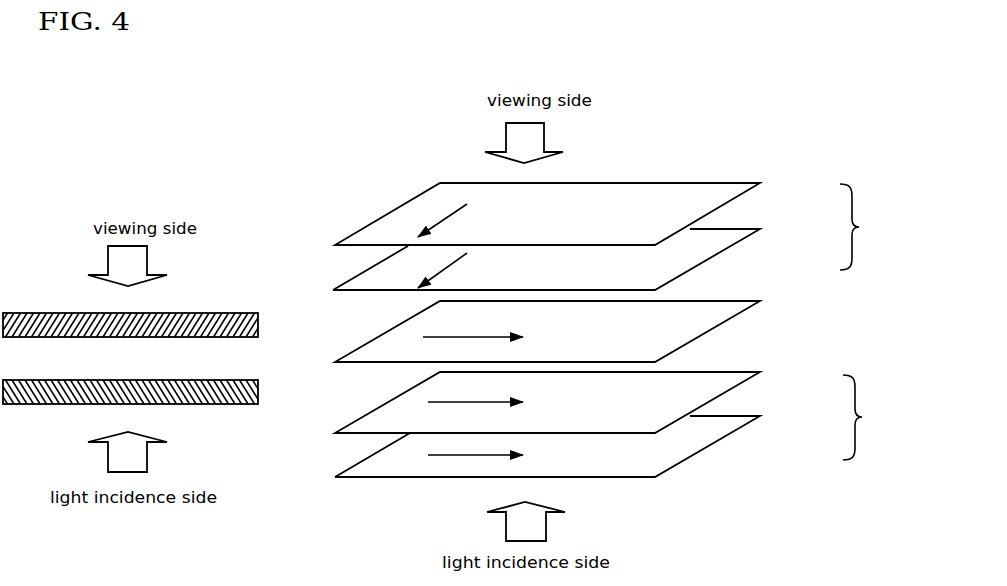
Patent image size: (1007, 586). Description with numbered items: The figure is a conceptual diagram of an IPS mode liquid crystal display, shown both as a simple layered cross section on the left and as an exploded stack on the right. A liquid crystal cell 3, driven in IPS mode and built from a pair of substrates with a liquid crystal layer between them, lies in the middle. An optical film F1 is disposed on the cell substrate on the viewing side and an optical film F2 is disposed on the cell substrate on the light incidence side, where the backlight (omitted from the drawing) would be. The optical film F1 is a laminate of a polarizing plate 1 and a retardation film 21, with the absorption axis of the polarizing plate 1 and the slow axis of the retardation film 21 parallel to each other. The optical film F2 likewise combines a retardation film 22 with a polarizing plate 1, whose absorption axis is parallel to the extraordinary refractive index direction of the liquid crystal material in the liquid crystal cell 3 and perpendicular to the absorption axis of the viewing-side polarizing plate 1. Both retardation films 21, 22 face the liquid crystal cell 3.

The polarizing plate 1 is at (665, 213).
The retardation film 21 is at (665, 263).
The liquid crystal cell 3 is at (673, 343).
The retardation film 22 is at (665, 407).
The optical film F1 is at (258, 327).
The optical film F2 is at (258, 392).